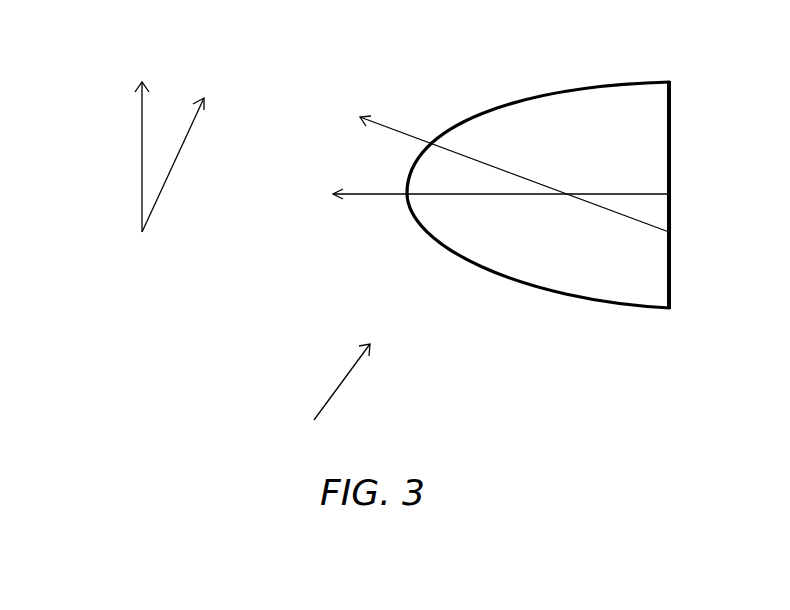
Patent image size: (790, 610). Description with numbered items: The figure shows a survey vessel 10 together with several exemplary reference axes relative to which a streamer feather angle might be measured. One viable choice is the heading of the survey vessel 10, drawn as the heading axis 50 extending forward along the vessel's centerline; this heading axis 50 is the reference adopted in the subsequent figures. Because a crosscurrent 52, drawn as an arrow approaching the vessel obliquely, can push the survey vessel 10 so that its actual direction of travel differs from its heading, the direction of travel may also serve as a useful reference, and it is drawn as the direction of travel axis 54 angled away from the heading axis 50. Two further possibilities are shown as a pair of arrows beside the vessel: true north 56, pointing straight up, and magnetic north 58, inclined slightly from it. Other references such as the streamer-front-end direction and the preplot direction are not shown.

The survey vessel 10 is at (557, 93).
The heading axis 50 is at (378, 197).
The crosscurrent 52 is at (342, 385).
The direction of travel axis 54 is at (398, 130).
The true north 56 is at (140, 128).
The magnetic north 58 is at (178, 155).